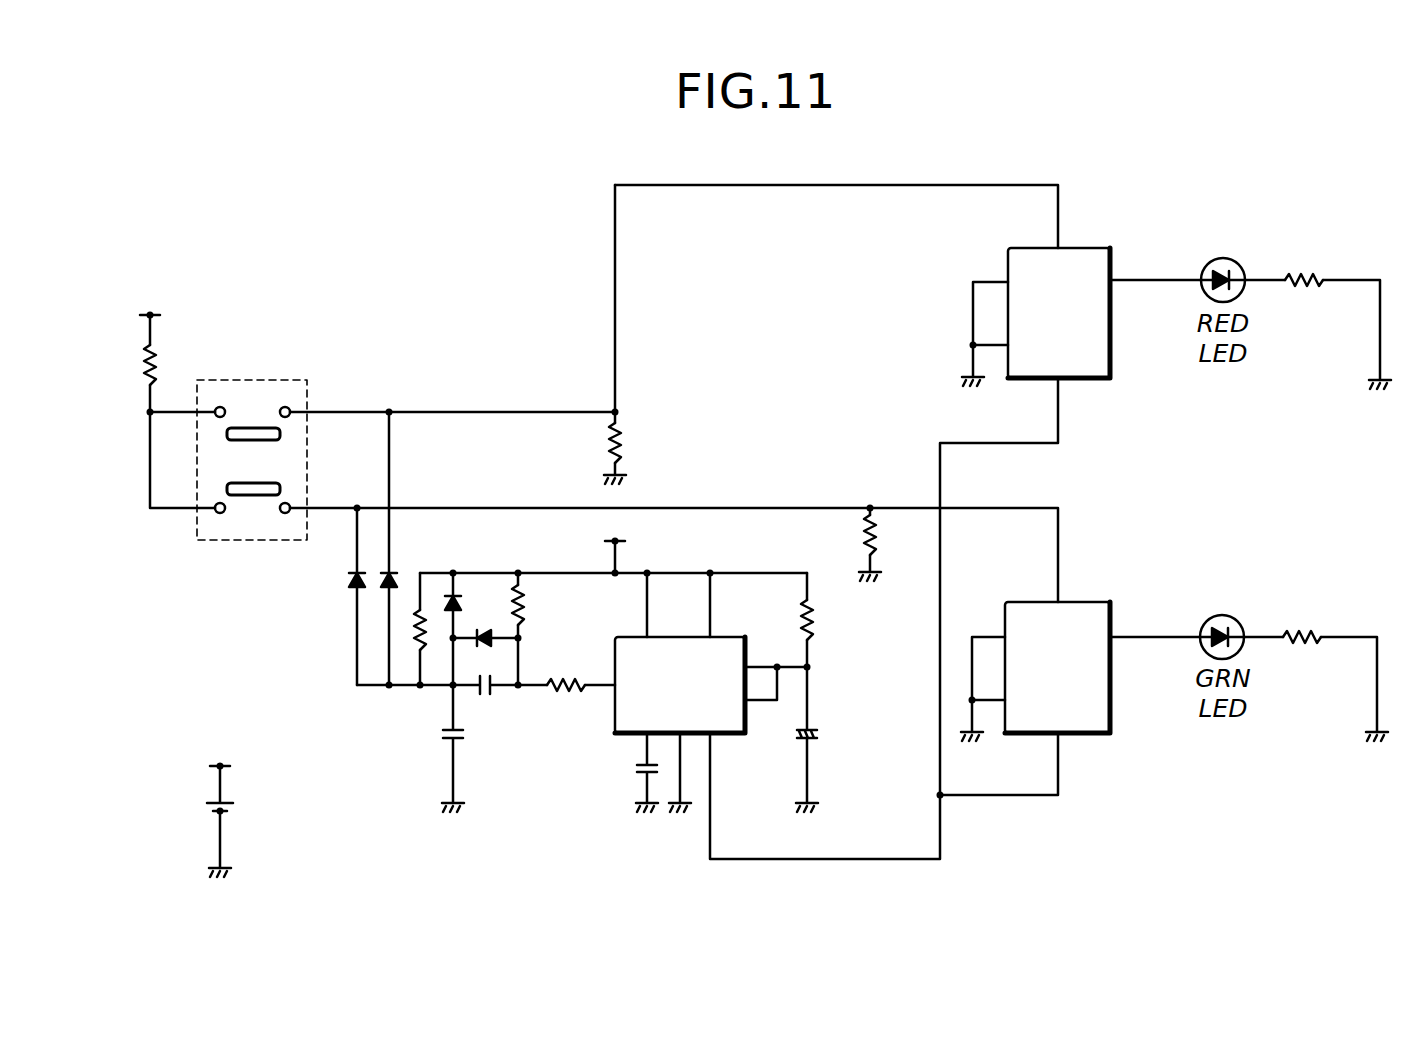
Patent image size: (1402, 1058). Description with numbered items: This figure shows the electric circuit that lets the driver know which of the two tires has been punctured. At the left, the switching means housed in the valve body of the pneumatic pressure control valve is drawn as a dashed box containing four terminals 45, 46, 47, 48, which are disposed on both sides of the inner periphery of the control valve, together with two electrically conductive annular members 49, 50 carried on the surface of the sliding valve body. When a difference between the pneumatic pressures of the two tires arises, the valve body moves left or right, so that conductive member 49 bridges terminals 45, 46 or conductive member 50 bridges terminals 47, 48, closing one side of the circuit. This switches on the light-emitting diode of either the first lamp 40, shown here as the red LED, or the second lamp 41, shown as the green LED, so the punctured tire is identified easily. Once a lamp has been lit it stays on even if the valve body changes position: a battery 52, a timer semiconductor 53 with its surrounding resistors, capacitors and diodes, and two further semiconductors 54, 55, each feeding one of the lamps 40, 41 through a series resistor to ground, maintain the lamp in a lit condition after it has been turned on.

The first lamp 40 is at (1223, 258).
The second lamp 41 is at (1218, 617).
The terminal 45 is at (287, 515).
The terminal 46 is at (221, 515).
The terminal 47 is at (287, 406).
The terminal 48 is at (215, 418).
The electrically conductive annular member 49 is at (258, 497).
The electrically conductive annular member 50 is at (281, 434).
The battery 52 is at (212, 806).
The timer semiconductor 53 is at (613, 708).
The semiconductor 54 is at (1093, 248).
The semiconductor 55 is at (1090, 602).